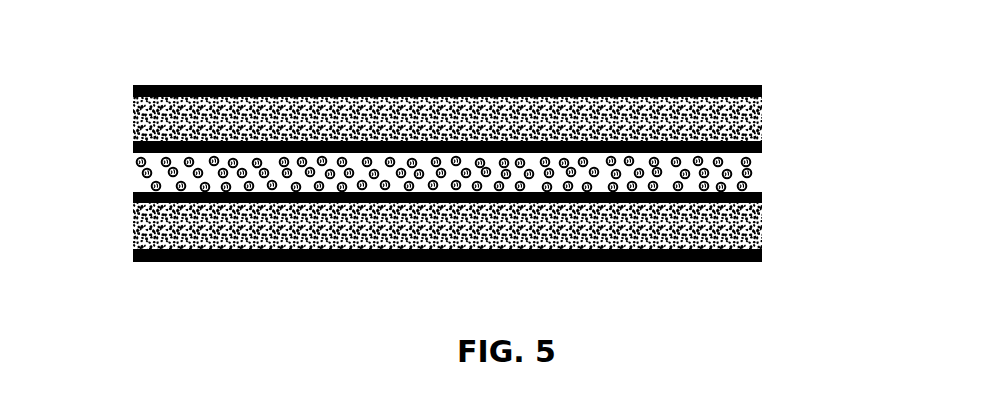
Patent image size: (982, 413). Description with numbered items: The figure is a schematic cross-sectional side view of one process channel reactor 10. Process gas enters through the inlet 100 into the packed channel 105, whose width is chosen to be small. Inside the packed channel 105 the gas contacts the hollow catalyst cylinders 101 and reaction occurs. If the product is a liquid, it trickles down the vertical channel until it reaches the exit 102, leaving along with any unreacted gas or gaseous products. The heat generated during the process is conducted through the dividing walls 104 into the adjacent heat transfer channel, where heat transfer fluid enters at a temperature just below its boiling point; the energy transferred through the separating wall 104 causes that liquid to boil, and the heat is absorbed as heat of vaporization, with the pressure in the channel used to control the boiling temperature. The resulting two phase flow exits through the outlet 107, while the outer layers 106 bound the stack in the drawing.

The process channel reactor 10 is at (328, 82).
The inlet 100 is at (133, 162).
The hollow catalyst cylinders 101 is at (132, 173).
The exit 102 is at (768, 180).
The dividing walls 104 is at (134, 146).
The packed channel 105 is at (138, 187).
The outer skin layer 106 is at (760, 117).
The foam layer 107 is at (768, 130).